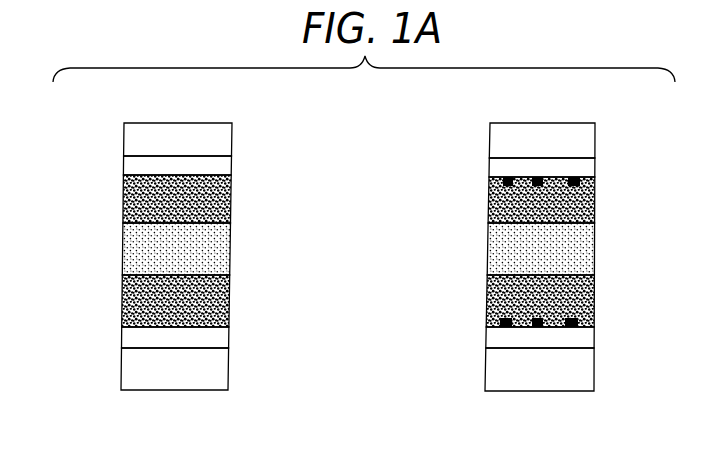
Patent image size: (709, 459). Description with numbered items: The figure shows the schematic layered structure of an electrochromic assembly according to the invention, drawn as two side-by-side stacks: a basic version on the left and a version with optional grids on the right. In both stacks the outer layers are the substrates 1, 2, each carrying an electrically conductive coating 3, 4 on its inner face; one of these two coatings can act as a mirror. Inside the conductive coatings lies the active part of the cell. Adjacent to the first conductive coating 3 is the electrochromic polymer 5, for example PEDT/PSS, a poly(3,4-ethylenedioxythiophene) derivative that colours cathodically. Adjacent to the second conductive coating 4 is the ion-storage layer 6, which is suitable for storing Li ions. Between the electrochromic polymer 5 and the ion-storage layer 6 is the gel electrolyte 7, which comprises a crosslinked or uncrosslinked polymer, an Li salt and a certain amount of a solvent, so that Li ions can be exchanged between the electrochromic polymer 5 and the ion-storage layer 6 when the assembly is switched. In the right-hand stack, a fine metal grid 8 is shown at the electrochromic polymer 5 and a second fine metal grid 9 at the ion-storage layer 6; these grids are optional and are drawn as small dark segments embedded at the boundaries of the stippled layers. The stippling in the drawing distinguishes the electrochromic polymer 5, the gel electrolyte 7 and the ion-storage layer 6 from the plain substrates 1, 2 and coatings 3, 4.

The substrate 1 is at (232, 137).
The substrate 2 is at (222, 367).
The electrically conductive coating 3 is at (226, 163).
The electrically conductive coating 4 is at (217, 337).
The electrochromic polymer 5 is at (220, 199).
The ion-storage layer 6 is at (213, 296).
The gel electrolyte 7 is at (218, 243).
The fine metal grid 8 is at (500, 186).
The fine metal grid 9 is at (497, 317).